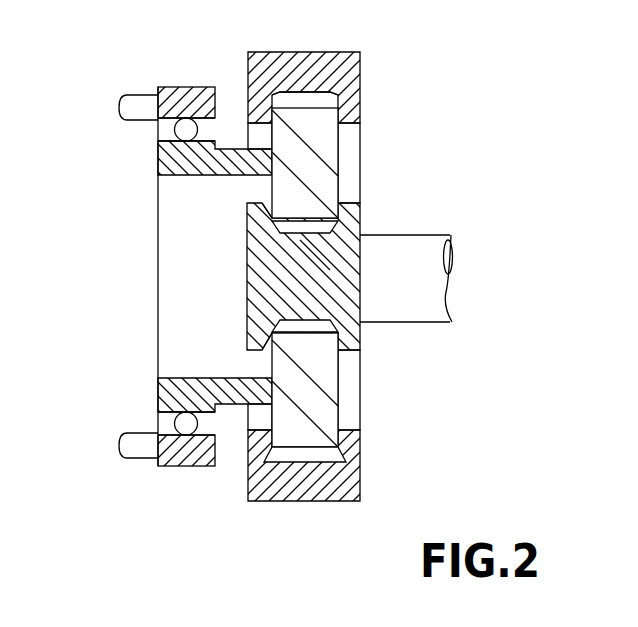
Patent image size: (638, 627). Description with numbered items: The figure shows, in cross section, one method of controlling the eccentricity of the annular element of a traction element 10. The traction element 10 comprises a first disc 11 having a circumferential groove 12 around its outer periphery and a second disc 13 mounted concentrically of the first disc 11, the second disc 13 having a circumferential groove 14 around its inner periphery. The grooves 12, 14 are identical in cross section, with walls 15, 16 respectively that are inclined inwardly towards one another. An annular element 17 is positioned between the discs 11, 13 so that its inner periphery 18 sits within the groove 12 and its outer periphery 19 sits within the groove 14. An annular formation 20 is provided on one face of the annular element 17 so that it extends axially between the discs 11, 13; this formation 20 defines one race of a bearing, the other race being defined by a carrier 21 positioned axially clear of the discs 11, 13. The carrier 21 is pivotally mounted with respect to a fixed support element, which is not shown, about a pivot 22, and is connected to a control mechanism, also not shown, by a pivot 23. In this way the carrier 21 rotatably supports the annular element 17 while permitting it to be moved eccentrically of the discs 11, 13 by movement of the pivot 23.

The traction element 10 is at (406, 79).
The first disc 11 is at (352, 230).
The circumferential groove 12 is at (328, 323).
The second disc 13 is at (352, 70).
The circumferential groove 14 is at (325, 455).
The walls 15 is at (343, 198).
The walls 16 is at (362, 132).
The annular element 17 is at (330, 388).
The inner periphery 18 is at (315, 238).
The outer periphery 19 is at (323, 455).
The annular formation 20 is at (165, 203).
The carrier 21 is at (178, 97).
The pivot 22 is at (130, 103).
The pivot 23 is at (132, 439).